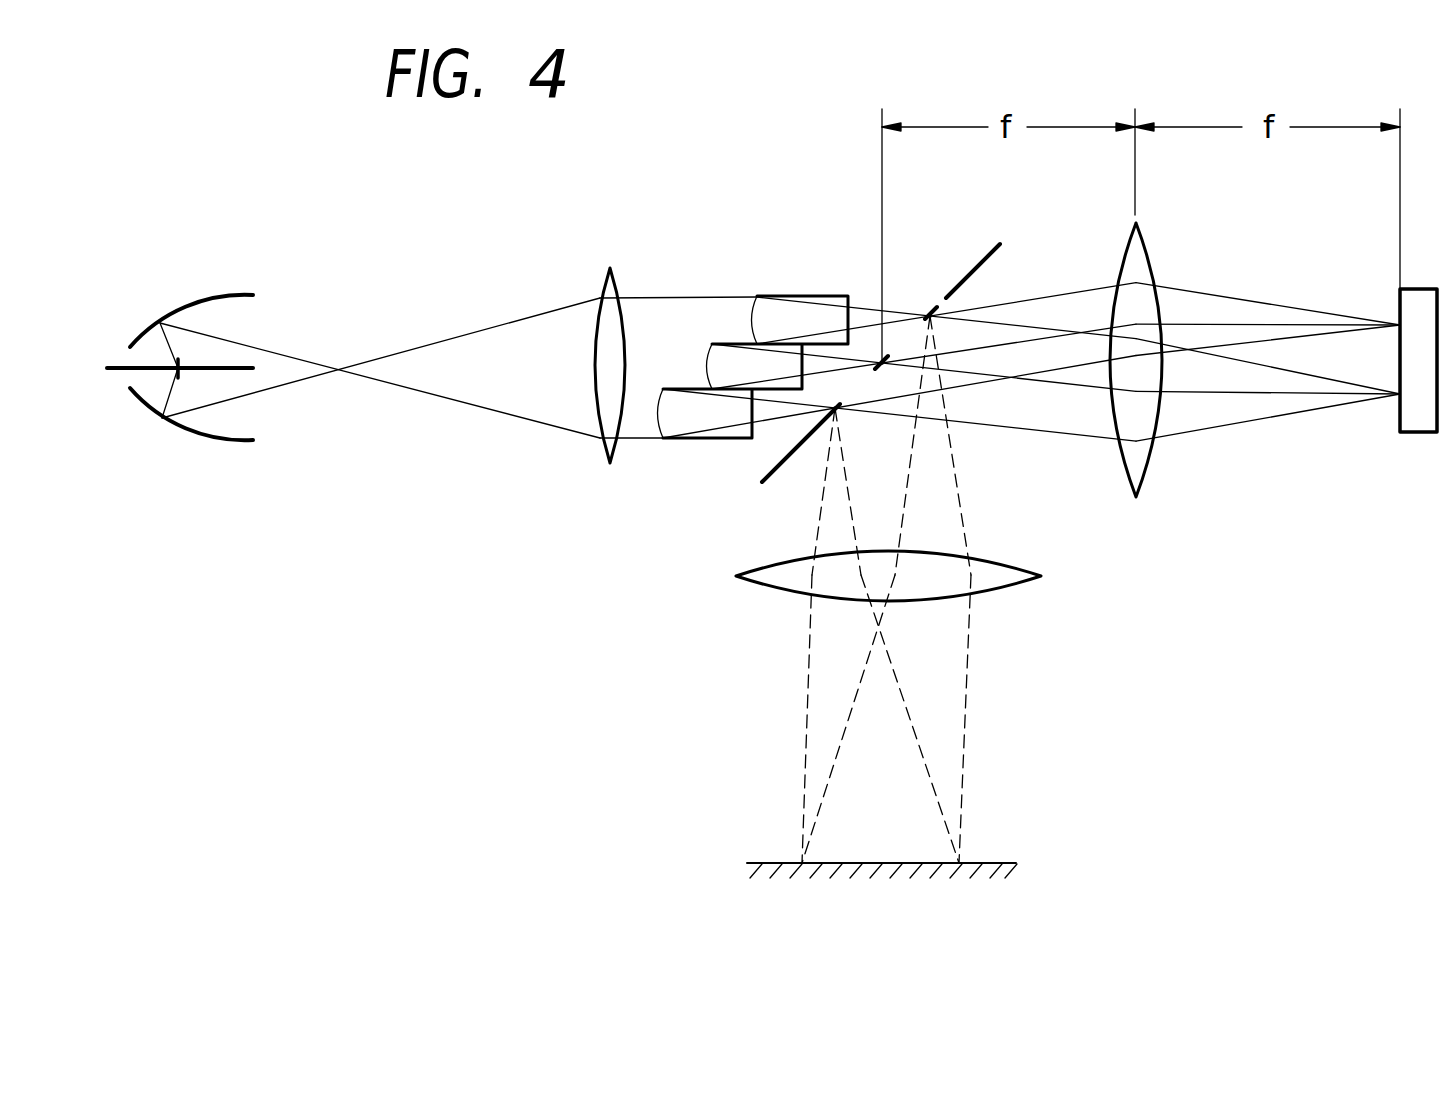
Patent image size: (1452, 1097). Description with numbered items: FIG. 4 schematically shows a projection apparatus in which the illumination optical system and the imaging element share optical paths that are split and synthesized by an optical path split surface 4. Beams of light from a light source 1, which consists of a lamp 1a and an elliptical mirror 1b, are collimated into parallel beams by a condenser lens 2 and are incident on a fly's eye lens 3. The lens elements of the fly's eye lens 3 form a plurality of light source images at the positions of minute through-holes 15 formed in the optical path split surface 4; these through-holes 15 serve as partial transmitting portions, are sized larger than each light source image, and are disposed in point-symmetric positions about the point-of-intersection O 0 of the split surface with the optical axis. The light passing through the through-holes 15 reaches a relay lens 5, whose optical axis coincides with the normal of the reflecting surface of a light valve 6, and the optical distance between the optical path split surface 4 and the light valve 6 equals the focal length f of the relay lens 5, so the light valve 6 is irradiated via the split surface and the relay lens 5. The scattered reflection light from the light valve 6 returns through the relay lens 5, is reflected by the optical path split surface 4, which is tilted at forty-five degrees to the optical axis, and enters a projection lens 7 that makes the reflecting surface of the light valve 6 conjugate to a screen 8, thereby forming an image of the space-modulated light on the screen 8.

The light source 1 is at (220, 358).
The lamp 1a is at (240, 366).
The elliptical mirror 1b is at (223, 296).
The condenser lens 2 is at (603, 448).
The fly's eye lens 3 is at (848, 256).
The optical path split surface 4 is at (998, 251).
The point-of-intersection O 0 is at (882, 363).
The through-holes 15 is at (930, 316).
The relay lens 5 is at (1133, 468).
The light valve 6 is at (1420, 417).
The projection lens 7 is at (1008, 577).
The screen 8 is at (992, 863).